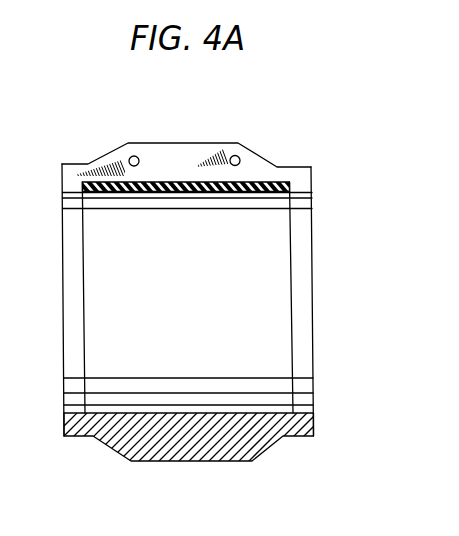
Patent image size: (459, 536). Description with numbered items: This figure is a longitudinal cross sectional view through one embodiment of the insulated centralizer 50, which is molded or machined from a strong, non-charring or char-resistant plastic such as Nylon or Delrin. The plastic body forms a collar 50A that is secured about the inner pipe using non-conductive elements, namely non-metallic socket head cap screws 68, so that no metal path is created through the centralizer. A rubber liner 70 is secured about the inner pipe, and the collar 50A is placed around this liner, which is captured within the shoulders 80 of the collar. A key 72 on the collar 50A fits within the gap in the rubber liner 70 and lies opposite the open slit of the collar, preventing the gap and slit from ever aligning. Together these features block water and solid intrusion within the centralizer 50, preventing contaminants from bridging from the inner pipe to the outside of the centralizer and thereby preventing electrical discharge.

The insulated centralizer 50 is at (59, 108).
The collar 50A is at (201, 149).
The socket head cap screw 68 is at (130, 157).
The rubber liner 70 is at (138, 191).
The key 72 is at (227, 418).
The shoulder 80 is at (300, 233).